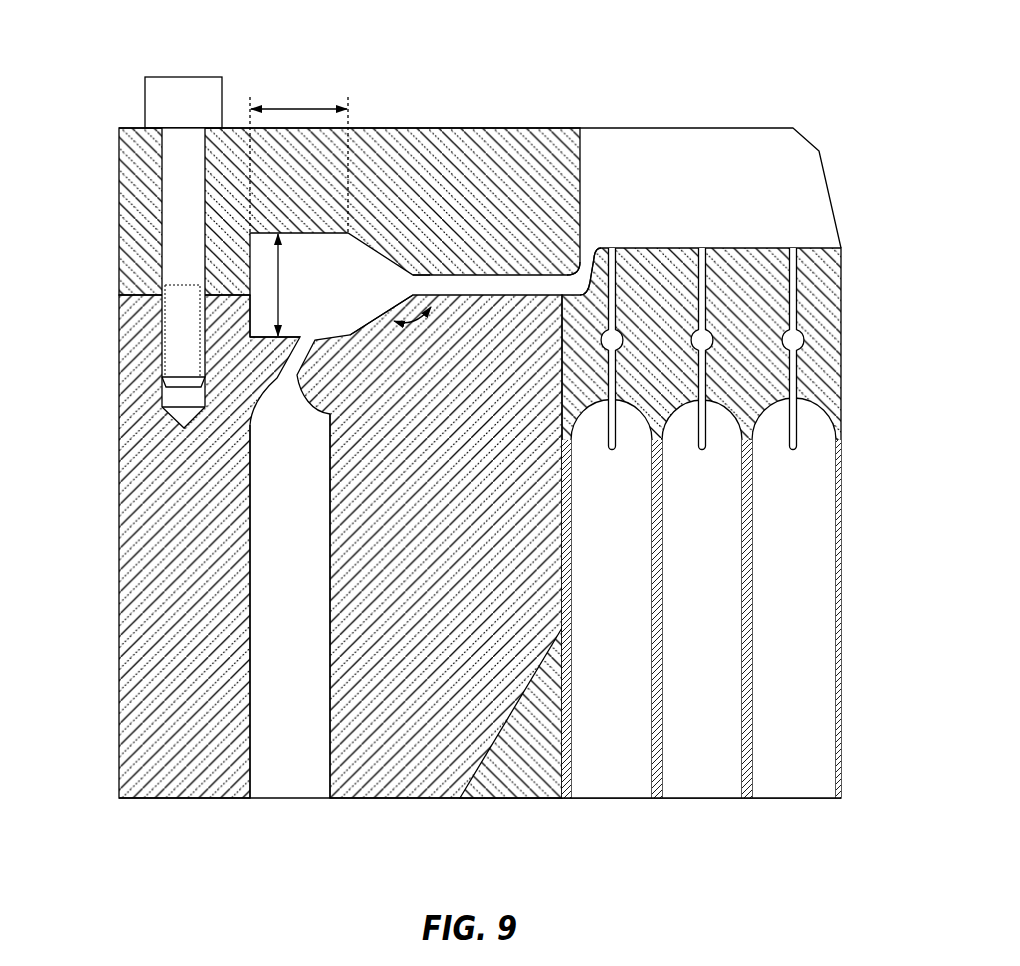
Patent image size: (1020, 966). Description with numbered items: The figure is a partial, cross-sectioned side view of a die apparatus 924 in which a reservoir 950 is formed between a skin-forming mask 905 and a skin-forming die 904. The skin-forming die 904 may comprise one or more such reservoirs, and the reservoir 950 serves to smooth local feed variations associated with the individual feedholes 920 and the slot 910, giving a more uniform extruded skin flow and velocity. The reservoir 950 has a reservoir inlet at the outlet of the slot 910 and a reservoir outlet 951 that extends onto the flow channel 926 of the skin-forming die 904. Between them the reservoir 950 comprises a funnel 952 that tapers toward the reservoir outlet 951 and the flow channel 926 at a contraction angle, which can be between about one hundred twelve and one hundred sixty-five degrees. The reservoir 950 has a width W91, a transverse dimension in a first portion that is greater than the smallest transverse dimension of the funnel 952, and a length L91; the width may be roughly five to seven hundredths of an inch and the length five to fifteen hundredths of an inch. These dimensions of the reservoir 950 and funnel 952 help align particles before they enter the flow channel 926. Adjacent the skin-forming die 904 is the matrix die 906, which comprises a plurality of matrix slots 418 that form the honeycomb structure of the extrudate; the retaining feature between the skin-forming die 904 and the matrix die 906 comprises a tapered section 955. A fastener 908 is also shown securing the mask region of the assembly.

The die apparatus 924 is at (643, 58).
The skin-forming mask 905 is at (438, 125).
The length L91 is at (308, 104).
The matrix die 906 is at (679, 246).
The matrix slots 418 is at (792, 247).
The flow channel 926 is at (589, 244).
The fastener 908 is at (146, 292).
The width W91 is at (279, 275).
The reservoir outlet 951 is at (413, 282).
The reservoir 950 is at (247, 320).
The slot 910 is at (287, 357).
The funnel 952 is at (357, 333).
The skin-forming die 904 is at (117, 453).
The feedholes 920 is at (330, 778).
The tapered section 955 is at (506, 746).